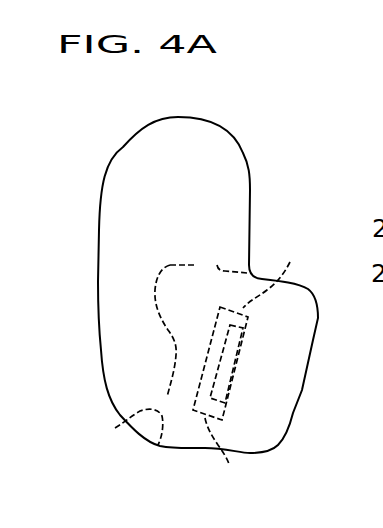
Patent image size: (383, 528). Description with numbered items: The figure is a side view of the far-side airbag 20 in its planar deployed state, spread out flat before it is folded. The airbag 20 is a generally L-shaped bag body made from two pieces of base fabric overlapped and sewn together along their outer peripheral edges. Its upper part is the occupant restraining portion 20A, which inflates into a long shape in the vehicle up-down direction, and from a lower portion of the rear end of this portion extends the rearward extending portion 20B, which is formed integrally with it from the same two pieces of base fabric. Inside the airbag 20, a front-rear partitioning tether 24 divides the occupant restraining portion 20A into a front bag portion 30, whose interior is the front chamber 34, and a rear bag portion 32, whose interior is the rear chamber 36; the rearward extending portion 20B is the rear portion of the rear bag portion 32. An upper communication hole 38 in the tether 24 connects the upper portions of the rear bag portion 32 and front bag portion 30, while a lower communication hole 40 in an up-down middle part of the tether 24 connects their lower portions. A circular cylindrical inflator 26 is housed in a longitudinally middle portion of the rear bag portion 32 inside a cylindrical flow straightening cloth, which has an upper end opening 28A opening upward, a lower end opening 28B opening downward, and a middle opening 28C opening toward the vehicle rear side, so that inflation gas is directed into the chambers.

The airbag 20 is at (197, 285).
The occupant restraining portion 20A is at (120, 205).
The rearward extending portion 20B is at (295, 330).
The front-rear partitioning tether 24 is at (170, 265).
The inflator 26 is at (243, 340).
The upper end opening 28A is at (316, 258).
The lower end opening 28B is at (262, 498).
The middle opening 28C is at (243, 372).
The front bag portion 30 is at (118, 303).
The rear bag portion 32 is at (266, 410).
The front chamber 34 is at (115, 347).
The rear chamber 36 is at (250, 432).
The upper communication hole 38 is at (217, 265).
The lower communication hole 40 is at (118, 427).